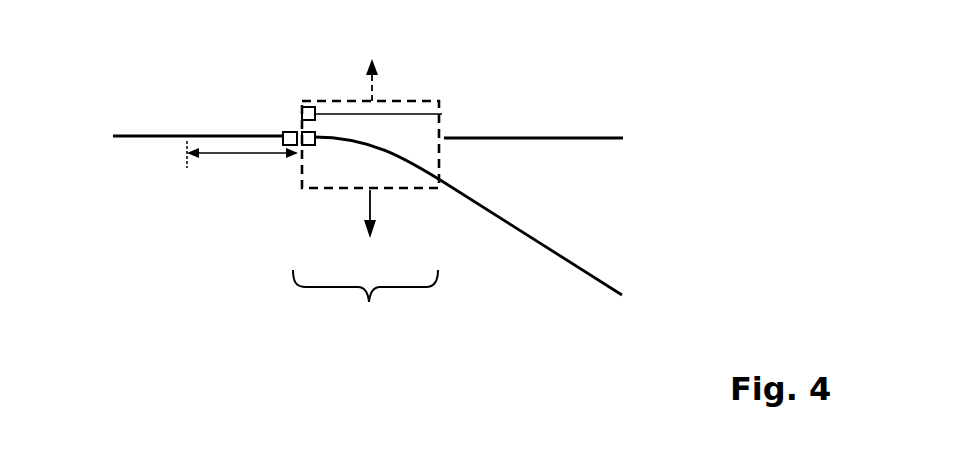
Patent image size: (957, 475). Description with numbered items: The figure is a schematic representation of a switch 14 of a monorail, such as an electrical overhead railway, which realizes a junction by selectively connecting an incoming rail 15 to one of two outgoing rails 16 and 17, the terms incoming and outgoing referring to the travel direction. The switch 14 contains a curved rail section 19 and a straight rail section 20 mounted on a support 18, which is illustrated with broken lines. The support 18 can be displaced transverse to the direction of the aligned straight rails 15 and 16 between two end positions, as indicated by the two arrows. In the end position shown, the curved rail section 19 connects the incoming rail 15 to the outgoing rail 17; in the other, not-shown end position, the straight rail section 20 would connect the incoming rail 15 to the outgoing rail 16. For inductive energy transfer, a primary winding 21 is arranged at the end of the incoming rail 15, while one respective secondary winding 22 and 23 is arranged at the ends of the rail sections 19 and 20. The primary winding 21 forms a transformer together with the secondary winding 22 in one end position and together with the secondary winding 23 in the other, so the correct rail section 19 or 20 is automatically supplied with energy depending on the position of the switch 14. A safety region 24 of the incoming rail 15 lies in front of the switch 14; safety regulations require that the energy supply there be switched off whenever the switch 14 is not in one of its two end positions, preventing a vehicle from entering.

The switch 14 is at (366, 203).
The incoming rail 15 is at (141, 135).
The outgoing rail 16 is at (573, 136).
The outgoing rail 17 is at (538, 243).
The support 18 is at (420, 145).
The curved rail section 19 is at (365, 143).
The straight rail section 20 is at (406, 112).
The primary winding 21 is at (287, 131).
The secondary winding 22 is at (298, 165).
The secondary winding 23 is at (311, 105).
The safety region 24 is at (238, 158).